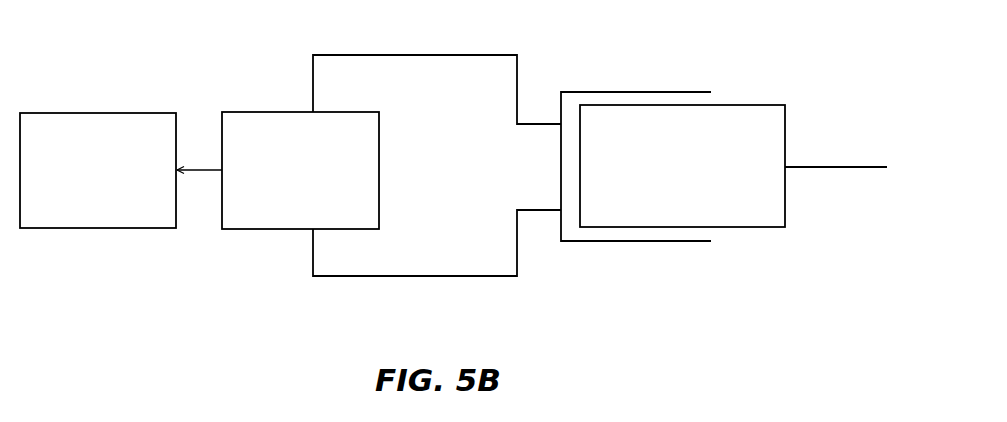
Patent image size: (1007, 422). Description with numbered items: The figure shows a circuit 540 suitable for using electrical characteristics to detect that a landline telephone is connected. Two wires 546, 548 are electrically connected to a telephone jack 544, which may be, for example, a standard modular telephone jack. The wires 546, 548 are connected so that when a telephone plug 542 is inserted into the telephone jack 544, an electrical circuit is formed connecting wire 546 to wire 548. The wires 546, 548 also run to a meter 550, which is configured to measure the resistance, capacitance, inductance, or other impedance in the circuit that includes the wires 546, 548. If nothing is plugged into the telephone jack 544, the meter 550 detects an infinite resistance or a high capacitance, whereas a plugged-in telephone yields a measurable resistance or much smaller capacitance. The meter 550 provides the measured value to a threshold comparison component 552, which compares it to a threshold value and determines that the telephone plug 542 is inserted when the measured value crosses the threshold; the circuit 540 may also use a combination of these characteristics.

The circuit 540 is at (647, 350).
The telephone plug 542 is at (757, 103).
The telephone jack 544 is at (626, 92).
The wire 546 is at (530, 120).
The wire 548 is at (529, 212).
The meter 550 is at (278, 170).
The threshold comparison component 552 is at (98, 170).